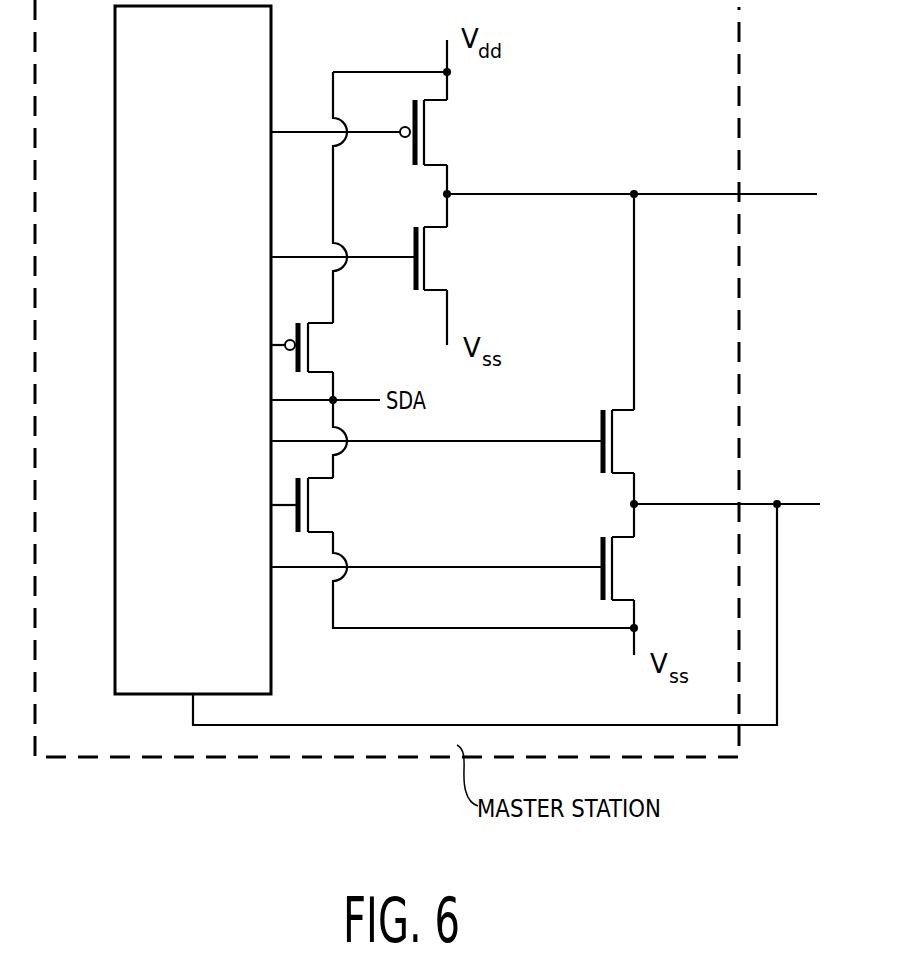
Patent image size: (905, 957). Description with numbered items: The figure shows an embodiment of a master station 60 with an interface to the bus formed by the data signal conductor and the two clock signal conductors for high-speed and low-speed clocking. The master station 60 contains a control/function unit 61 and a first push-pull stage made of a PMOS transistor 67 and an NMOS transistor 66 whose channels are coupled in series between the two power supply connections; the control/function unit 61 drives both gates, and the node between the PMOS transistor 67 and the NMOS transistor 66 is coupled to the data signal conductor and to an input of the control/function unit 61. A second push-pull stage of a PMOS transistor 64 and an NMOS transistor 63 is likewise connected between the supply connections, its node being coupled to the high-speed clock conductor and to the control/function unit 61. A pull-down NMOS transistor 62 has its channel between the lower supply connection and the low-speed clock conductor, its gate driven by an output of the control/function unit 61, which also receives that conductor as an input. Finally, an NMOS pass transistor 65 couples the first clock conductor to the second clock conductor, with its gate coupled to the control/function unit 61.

The master station 60 is at (110, 757).
The control/function unit 61 is at (258, 650).
The pull-down NMOS transistor 62 is at (623, 573).
The NMOS transistor 63 is at (441, 261).
The PMOS transistor 64 is at (441, 136).
The NMOS pass transistor 65 is at (623, 442).
The NMOS transistor 66 is at (313, 507).
The PMOS transistor 67 is at (313, 351).